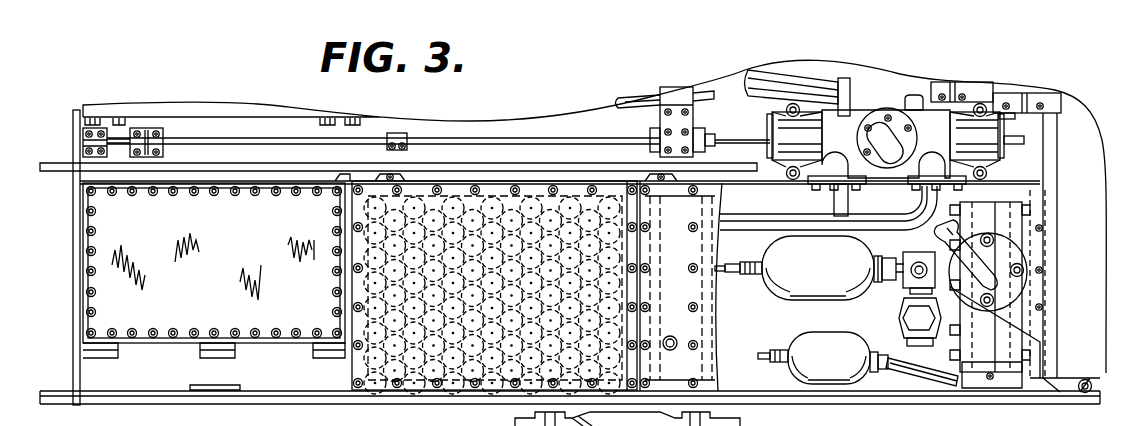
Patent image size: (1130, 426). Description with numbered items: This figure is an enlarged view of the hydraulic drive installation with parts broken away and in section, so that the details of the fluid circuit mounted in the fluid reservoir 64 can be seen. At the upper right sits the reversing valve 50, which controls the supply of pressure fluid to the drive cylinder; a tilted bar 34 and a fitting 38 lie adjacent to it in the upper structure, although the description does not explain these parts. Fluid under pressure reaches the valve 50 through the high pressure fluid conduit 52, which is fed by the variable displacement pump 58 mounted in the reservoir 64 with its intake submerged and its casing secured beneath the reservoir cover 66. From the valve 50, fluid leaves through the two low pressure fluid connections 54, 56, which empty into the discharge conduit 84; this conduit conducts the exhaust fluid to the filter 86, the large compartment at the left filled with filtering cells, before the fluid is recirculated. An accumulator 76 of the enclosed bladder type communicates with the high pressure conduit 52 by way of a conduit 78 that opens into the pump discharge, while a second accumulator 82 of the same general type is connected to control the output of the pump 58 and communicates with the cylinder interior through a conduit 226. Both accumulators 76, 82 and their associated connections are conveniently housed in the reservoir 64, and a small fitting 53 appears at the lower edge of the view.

The cylinder bar 34 is at (760, 70).
The plug and bracket 38 is at (908, 97).
The reversing valve 50 is at (856, 127).
The high pressure fluid conduit 52 is at (898, 143).
The lower fitting 53 is at (640, 418).
The low pressure fluid connection 54 is at (834, 200).
The low pressure fluid connection 56 is at (918, 205).
The variable displacement pump 58 is at (960, 222).
The fluid reservoir 64 is at (940, 386).
The reservoir cover 66 is at (1005, 318).
The accumulator 76 is at (783, 258).
The conduit 78 is at (896, 284).
The second accumulator 82 is at (805, 348).
The discharge conduit 84 is at (738, 222).
The filter 86 is at (418, 372).
The conduit 226 is at (906, 366).